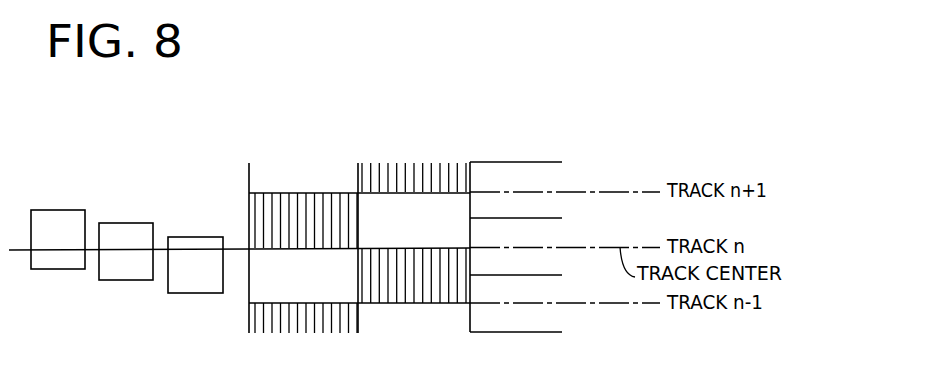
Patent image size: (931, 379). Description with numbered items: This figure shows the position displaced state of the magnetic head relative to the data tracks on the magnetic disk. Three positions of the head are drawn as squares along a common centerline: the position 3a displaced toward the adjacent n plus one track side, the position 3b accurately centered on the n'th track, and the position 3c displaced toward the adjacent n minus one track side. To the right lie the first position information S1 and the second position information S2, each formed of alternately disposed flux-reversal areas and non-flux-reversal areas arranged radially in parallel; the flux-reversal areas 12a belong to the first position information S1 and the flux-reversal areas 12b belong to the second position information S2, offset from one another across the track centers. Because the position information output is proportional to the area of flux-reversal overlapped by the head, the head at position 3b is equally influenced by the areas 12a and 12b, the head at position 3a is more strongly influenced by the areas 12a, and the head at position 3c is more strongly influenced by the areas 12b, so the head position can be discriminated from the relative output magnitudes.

The head position 3a is at (60, 215).
The head position 3b is at (125, 230).
The head position 3c is at (190, 237).
The first position information S1 is at (306, 152).
The second position information S2 is at (425, 150).
The flux-reversal areas of the first position information 12a is at (312, 218).
The flux-reversal areas of the second position information 12b is at (408, 282).